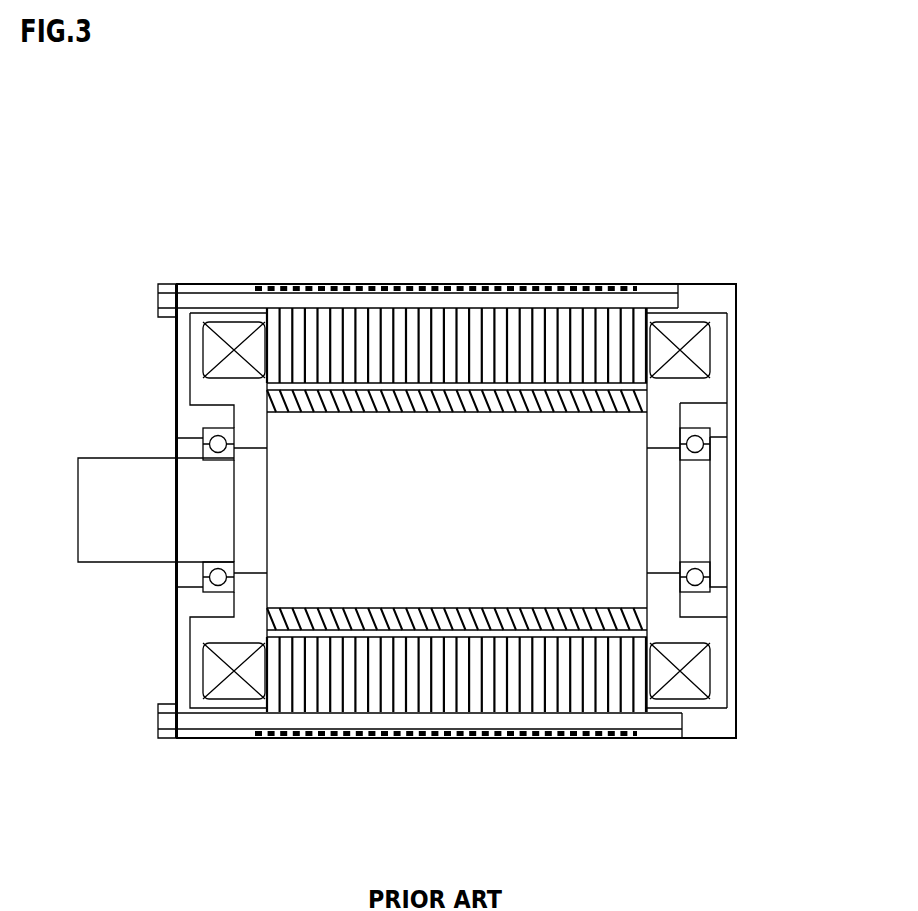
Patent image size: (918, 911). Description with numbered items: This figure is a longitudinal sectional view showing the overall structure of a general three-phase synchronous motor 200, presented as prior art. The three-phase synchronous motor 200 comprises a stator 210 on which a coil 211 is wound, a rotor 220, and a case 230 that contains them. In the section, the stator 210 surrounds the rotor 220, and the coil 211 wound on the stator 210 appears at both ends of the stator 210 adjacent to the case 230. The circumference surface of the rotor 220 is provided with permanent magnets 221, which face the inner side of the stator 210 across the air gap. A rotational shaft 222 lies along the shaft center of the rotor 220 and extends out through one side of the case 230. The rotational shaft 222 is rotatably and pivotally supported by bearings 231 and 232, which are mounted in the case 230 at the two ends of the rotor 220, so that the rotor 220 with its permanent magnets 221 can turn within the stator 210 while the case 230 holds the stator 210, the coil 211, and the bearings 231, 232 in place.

The three-phase synchronous motor 200 is at (672, 750).
The stator 210 is at (540, 318).
The coil 211 is at (704, 667).
The rotor 220 is at (620, 499).
The permanent magnet 221 is at (636, 401).
The rotational shaft 222 is at (141, 552).
The case 230 is at (705, 297).
The bearing 231 is at (206, 430).
The bearing 232 is at (709, 432).